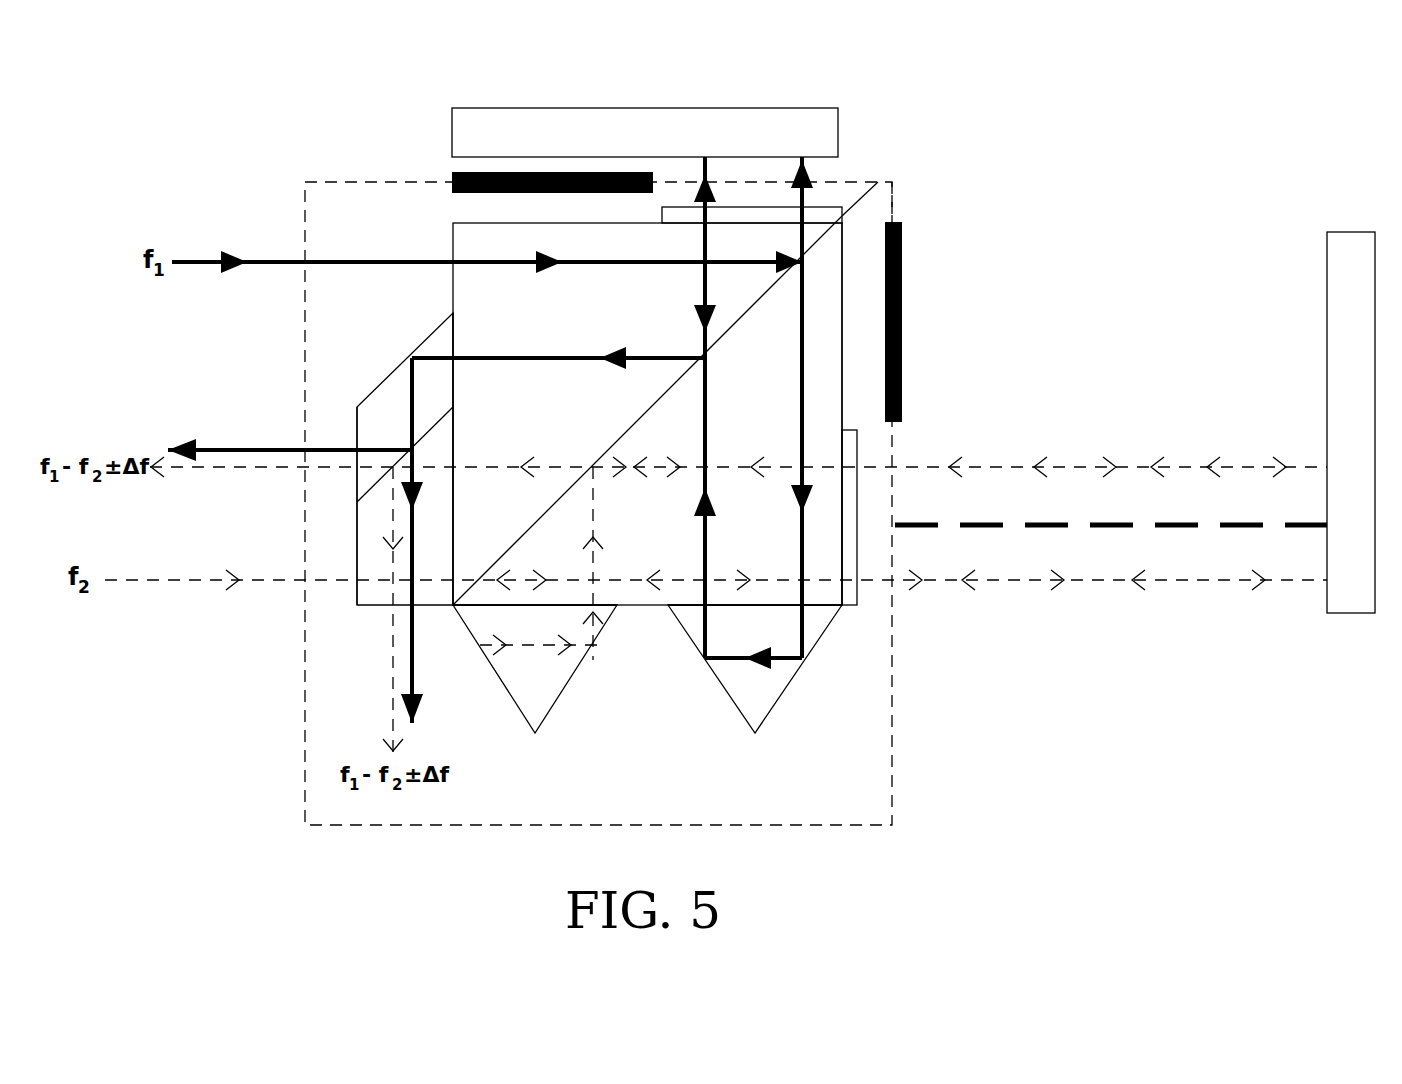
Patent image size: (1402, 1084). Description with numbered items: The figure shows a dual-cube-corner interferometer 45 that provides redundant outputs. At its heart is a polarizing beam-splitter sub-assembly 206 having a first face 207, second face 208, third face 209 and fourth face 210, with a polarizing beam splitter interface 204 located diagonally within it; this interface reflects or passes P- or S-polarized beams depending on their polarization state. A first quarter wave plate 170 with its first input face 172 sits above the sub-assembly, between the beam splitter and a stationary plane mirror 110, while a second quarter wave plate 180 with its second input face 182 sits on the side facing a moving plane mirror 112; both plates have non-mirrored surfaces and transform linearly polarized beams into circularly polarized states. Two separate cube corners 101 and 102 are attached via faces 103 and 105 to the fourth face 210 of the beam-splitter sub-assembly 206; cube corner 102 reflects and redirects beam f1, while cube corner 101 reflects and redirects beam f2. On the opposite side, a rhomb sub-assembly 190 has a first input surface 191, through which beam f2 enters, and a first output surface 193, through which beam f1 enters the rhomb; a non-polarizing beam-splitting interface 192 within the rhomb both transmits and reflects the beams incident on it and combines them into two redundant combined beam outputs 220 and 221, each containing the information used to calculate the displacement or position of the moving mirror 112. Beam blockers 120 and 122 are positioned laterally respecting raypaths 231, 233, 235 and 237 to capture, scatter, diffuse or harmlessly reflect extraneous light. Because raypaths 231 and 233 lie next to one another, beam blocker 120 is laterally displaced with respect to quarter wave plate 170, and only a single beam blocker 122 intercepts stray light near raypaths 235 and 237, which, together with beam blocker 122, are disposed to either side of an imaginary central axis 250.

The interferometer 45 is at (305, 235).
The cube corner 101 is at (530, 700).
The cube corner 102 is at (752, 713).
The face 103 is at (556, 607).
The face 105 is at (757, 607).
The stationary plane mirror 110 is at (535, 126).
The moving plane mirror 112 is at (1347, 232).
The beam blocker 120 is at (452, 172).
The beam blocker 122 is at (902, 268).
The quarter wave plate 170 is at (888, 185).
The first input face 172 is at (737, 224).
The quarter wave plate 180 is at (848, 609).
The second input face 182 is at (845, 485).
The rhomb sub-assembly 190 is at (396, 352).
The first input surface 191 is at (356, 522).
The non-polarizing beam-splitting interface 192 is at (430, 427).
The first output surface 193 is at (456, 444).
The polarizing beam splitter interface 204 is at (636, 423).
The polarizing beam-splitter sub-assembly 206 is at (482, 243).
The first face 207 is at (456, 340).
The second face 208 is at (612, 226).
The third face 209 is at (806, 404).
The fourth face 210 is at (656, 584).
The combined beam output 220 is at (244, 449).
The combined beam output 221 is at (410, 668).
The raypath 231 is at (700, 172).
The raypath 233 is at (812, 167).
The raypath 235 is at (1152, 466).
The raypath 237 is at (1136, 585).
The imaginary central axis 250 is at (1193, 527).